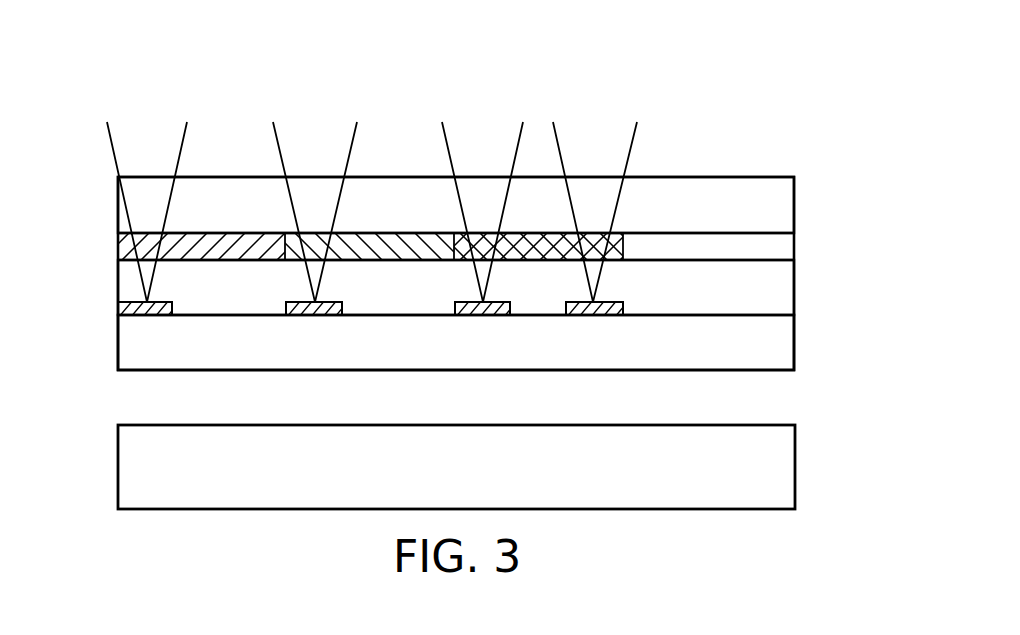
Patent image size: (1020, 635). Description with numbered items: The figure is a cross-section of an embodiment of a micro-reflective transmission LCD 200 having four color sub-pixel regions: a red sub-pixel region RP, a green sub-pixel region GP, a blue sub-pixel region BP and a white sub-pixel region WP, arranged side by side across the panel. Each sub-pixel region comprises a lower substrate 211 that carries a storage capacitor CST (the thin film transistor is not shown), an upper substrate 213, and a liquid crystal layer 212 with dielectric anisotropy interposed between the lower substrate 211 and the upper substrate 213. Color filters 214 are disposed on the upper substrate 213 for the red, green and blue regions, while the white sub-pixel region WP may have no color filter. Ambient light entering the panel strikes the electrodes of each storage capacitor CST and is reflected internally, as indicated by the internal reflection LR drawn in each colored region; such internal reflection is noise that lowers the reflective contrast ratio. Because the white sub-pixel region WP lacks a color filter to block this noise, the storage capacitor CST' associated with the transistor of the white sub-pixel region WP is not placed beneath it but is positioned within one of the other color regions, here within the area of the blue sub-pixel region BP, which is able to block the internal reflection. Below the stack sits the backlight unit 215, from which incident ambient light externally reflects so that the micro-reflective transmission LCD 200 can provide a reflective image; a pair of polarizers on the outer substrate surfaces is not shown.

The micro-reflective transmission LCD 200 is at (139, 38).
The lower substrate 211 is at (783, 342).
The liquid crystal layer 212 is at (783, 274).
The upper substrate 213 is at (783, 205).
The color filters 214 is at (796, 246).
The backlight unit 215 is at (783, 467).
The storage capacitor CST is at (269, 303).
The storage capacitor of the white sub-pixel region CST' is at (721, 304).
The internal reflection LR is at (642, 135).
The red sub-pixel region RP is at (245, 148).
The green sub-pixel region GP is at (413, 150).
The blue sub-pixel region BP is at (540, 150).
The white sub-pixel region WP is at (723, 150).